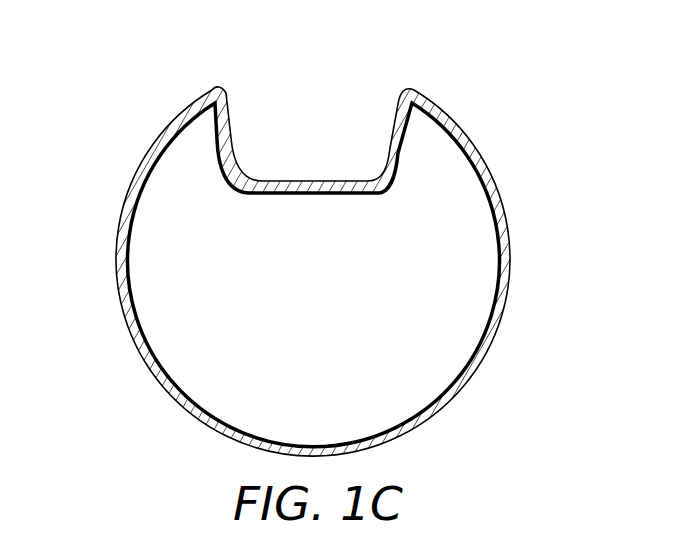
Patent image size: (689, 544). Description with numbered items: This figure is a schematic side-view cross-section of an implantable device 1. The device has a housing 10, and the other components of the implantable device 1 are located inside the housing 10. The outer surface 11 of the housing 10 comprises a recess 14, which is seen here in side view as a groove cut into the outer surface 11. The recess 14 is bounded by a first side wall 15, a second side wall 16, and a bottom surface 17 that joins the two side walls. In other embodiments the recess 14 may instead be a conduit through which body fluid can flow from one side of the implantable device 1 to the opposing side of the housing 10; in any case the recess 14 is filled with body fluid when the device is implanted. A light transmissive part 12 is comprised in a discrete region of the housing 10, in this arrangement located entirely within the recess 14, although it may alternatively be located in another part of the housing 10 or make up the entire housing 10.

The implantable device 1 is at (113, 102).
The housing 10 is at (507, 301).
The outer surface 11 is at (118, 302).
The light transmissive part 12 is at (386, 131).
The recess 14 is at (278, 84).
The first side wall 15 is at (232, 148).
The second side wall 16 is at (390, 148).
The bottom surface 17 is at (312, 188).